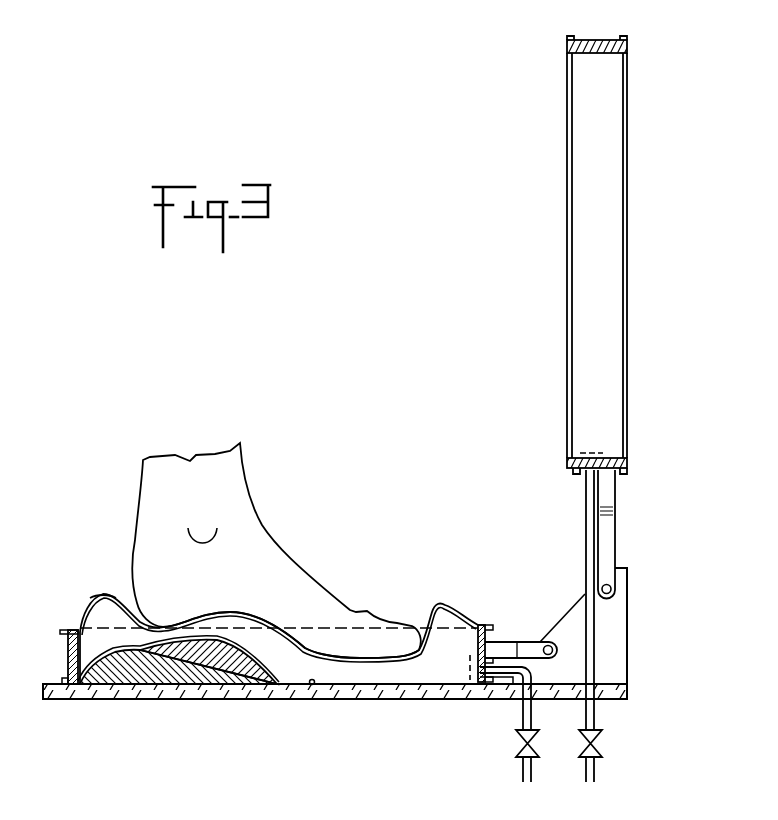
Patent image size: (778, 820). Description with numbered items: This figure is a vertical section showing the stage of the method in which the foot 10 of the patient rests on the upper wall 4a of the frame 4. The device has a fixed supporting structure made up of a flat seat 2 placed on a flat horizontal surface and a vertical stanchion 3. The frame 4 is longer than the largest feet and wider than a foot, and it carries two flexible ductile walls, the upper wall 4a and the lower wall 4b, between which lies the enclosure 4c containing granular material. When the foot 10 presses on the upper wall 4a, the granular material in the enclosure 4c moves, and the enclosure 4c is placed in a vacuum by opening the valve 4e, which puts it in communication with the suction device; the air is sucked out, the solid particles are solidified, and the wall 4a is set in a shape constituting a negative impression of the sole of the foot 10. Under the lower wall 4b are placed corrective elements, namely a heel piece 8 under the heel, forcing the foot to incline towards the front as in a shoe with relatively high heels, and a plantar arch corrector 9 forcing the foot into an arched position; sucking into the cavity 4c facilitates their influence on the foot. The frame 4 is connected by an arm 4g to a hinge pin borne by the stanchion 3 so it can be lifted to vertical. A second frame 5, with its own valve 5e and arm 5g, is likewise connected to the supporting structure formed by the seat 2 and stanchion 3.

The flat seat 2 is at (422, 690).
The vertical stanchion 3 is at (620, 642).
The frame 4 is at (67, 658).
The upper wall 4a is at (103, 592).
The lower wall 4b is at (309, 688).
The enclosure 4c is at (355, 675).
The valve 4e is at (524, 752).
The arm 4g is at (520, 640).
The frame 5 is at (599, 47).
The valve 5e is at (600, 752).
The arm 5g is at (608, 533).
The heel piece 8 is at (155, 680).
The plantar arch corrector 9 is at (243, 668).
The foot 10 is at (272, 552).